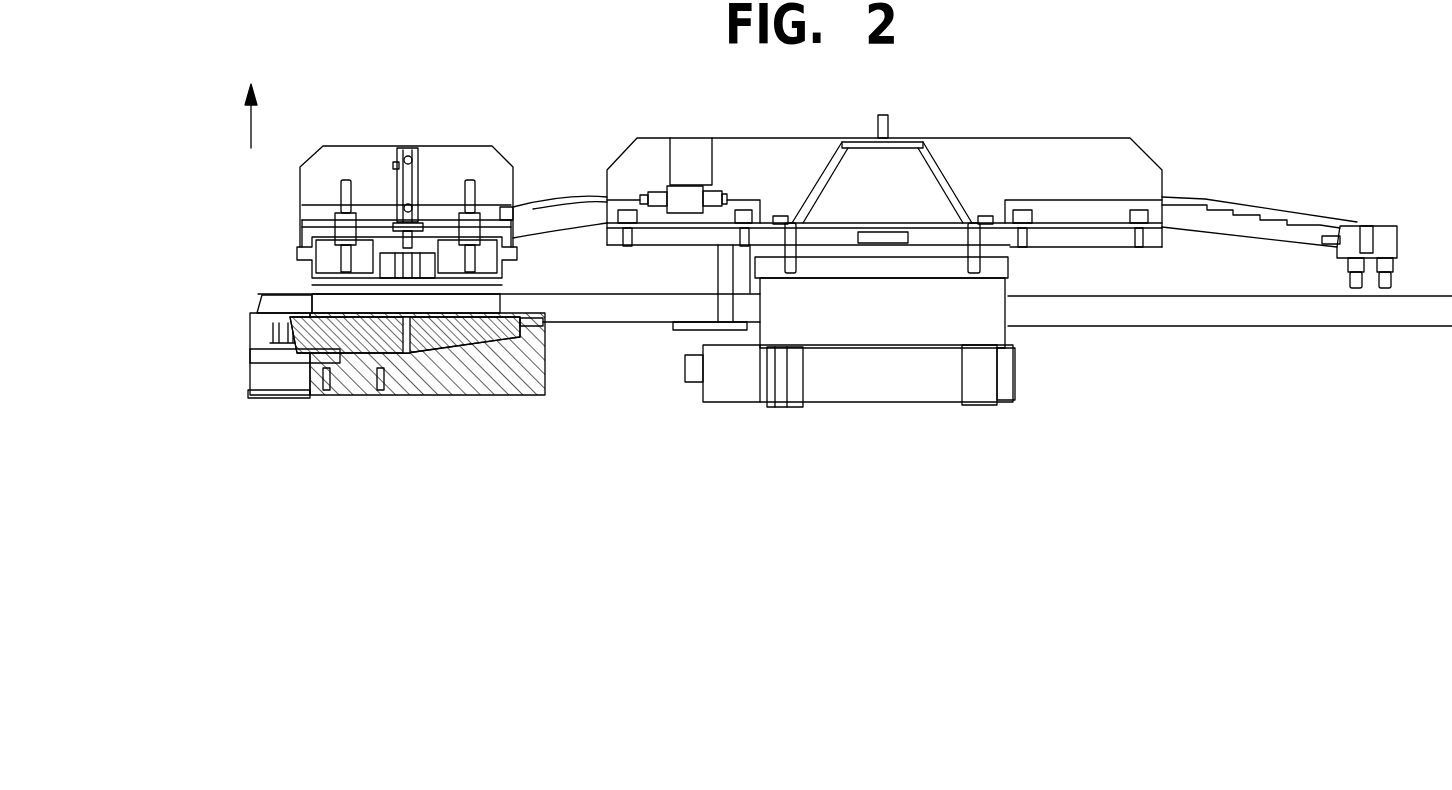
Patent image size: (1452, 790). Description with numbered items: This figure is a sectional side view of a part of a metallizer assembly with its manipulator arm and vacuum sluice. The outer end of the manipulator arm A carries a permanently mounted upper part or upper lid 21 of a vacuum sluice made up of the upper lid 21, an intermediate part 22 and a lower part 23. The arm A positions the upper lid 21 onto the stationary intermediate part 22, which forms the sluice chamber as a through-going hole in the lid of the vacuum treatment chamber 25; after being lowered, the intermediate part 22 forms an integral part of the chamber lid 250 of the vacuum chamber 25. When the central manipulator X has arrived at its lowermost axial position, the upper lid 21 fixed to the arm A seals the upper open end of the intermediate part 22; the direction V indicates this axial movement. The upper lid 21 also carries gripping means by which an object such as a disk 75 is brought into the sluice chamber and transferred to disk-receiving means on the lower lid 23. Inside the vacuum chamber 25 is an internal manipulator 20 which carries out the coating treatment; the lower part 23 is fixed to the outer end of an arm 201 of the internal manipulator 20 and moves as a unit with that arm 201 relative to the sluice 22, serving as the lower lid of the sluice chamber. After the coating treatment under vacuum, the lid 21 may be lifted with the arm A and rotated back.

The internal manipulator 20 is at (252, 350).
The upper part 21 is at (305, 250).
The intermediate part 22 is at (487, 307).
The lower part 23 is at (292, 300).
The vacuum chamber 25 is at (465, 373).
The disk 75 is at (495, 292).
The arm 201 is at (350, 346).
The chamber lid 250 is at (631, 316).
The manipulator arm A is at (552, 222).
The central manipulator X is at (980, 168).
The vertical direction V is at (263, 112).